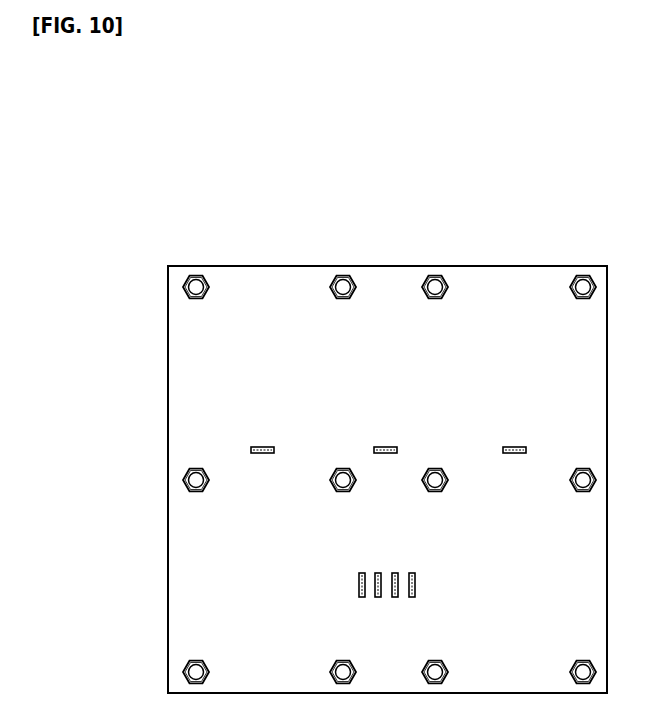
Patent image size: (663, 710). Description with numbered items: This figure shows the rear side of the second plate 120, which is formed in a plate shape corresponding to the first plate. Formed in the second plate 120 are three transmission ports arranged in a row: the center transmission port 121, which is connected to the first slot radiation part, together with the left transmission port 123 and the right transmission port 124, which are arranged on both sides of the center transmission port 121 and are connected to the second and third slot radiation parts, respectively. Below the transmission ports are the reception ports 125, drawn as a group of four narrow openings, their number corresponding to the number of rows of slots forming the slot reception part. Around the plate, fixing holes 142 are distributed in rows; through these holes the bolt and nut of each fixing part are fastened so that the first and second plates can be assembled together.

The second plate 120 is at (138, 163).
The center transmission port 121 is at (385, 447).
The left transmission port 123 is at (263, 447).
The right transmission port 124 is at (515, 447).
The reception ports 125 is at (357, 578).
The fixing hole 142 is at (196, 672).